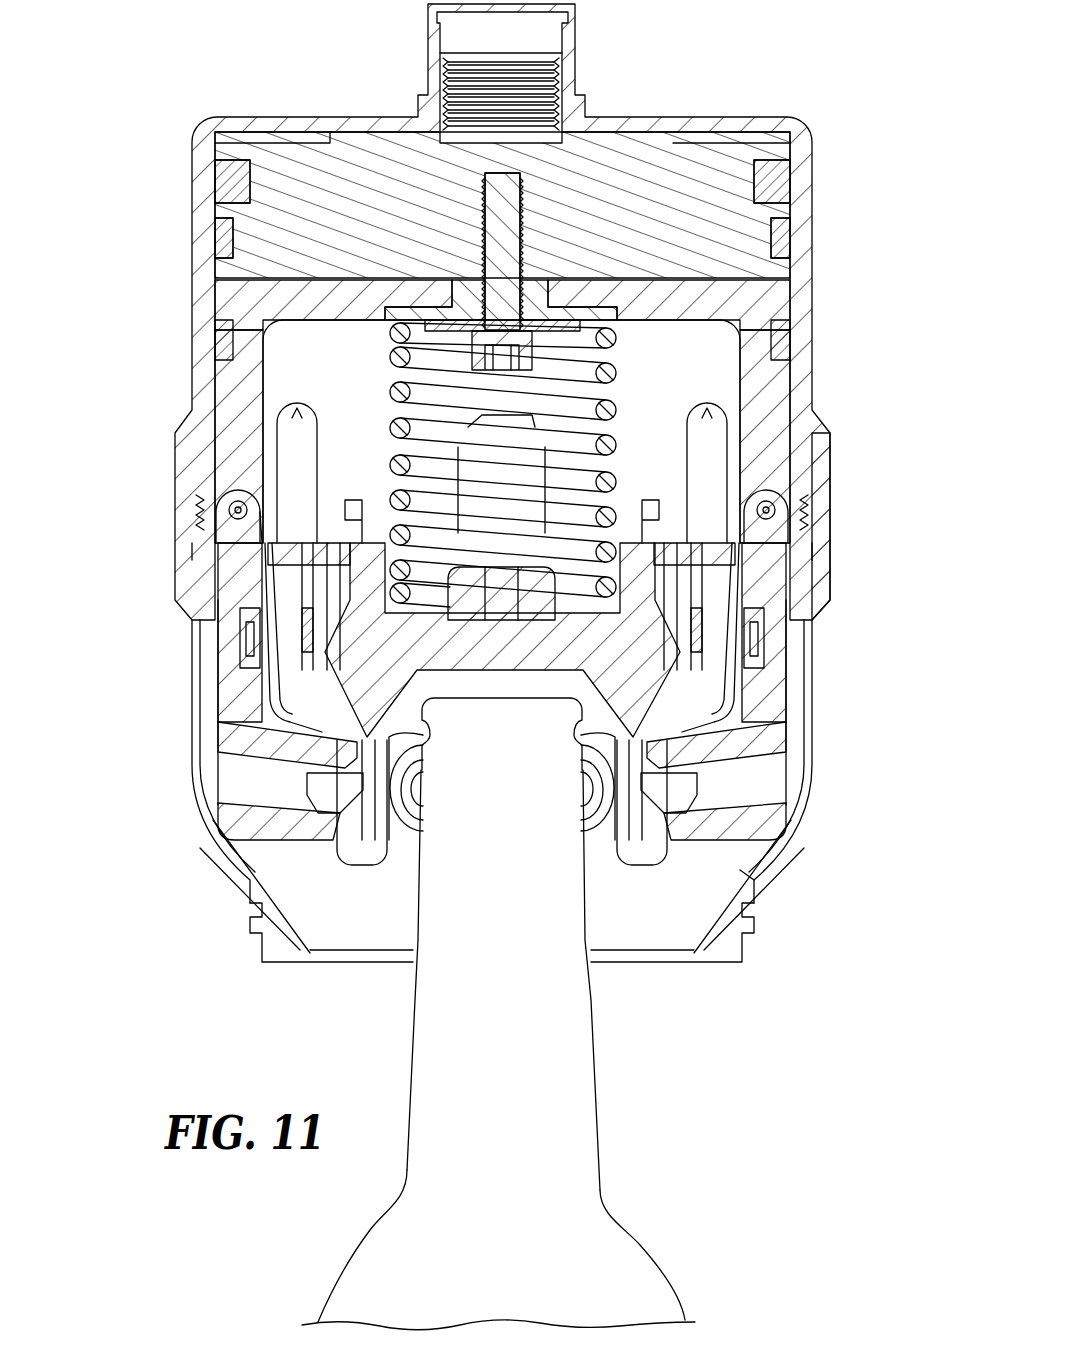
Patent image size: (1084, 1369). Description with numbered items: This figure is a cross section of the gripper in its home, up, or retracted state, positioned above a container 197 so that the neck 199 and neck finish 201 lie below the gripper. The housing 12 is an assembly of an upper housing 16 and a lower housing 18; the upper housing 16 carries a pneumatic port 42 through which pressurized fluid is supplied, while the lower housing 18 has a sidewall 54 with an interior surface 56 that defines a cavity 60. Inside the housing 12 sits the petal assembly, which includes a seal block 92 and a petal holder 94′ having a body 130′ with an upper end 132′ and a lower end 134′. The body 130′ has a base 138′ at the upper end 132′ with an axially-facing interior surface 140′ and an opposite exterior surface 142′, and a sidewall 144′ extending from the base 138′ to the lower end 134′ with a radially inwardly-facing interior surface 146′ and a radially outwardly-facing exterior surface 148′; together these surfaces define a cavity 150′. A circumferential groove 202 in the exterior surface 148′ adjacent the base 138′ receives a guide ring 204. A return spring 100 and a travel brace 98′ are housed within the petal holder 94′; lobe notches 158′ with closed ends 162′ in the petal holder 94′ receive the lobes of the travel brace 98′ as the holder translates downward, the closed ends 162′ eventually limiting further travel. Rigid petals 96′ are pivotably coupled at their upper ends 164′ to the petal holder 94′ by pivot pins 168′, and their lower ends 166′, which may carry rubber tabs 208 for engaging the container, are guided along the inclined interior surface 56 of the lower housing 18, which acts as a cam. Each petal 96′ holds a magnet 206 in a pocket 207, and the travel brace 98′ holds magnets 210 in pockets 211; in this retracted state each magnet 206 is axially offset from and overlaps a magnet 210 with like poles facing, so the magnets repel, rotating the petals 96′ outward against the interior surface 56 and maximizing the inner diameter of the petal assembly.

The upper housing 16 is at (195, 152).
The pneumatic port 42 is at (576, 40).
The seal block 92 is at (648, 160).
The petal holder 94′ is at (648, 290).
The guide ring 204 is at (215, 343).
The groove 202 is at (800, 333).
The base 138′ is at (335, 282).
The exterior surface 142′ is at (402, 280).
The body 130′ is at (258, 382).
The sidewall 144′ is at (775, 390).
The exterior surface 148′ is at (790, 432).
The interior surface 140′ is at (300, 323).
The interior surface 146′ is at (740, 383).
The cavity 150′ is at (270, 410).
The upper end 132′ is at (178, 283).
The lower end 134′ is at (850, 463).
The upper end 164′ is at (856, 532).
The lobe notch 158′ is at (300, 440).
The closed end 162′ is at (300, 412).
The return spring 100 is at (616, 380).
The pivot pin 168′ is at (235, 512).
The housing 12 is at (238, 505).
The travel brace 98′ is at (535, 648).
The pocket 211 is at (312, 555).
The magnet 210 is at (330, 625).
The petal 96′ is at (238, 692).
The magnet 206 is at (248, 640).
The pocket 207 is at (242, 652).
The lower housing 18 is at (205, 790).
The sidewall 54 is at (792, 830).
The lower end 166′ is at (823, 797).
The interior surface 56 is at (755, 865).
The cavity 60 is at (282, 862).
The neck finish 201 is at (418, 790).
The rubber tab 208 is at (630, 840).
The neck 199 is at (548, 1052).
The container 197 is at (625, 1258).